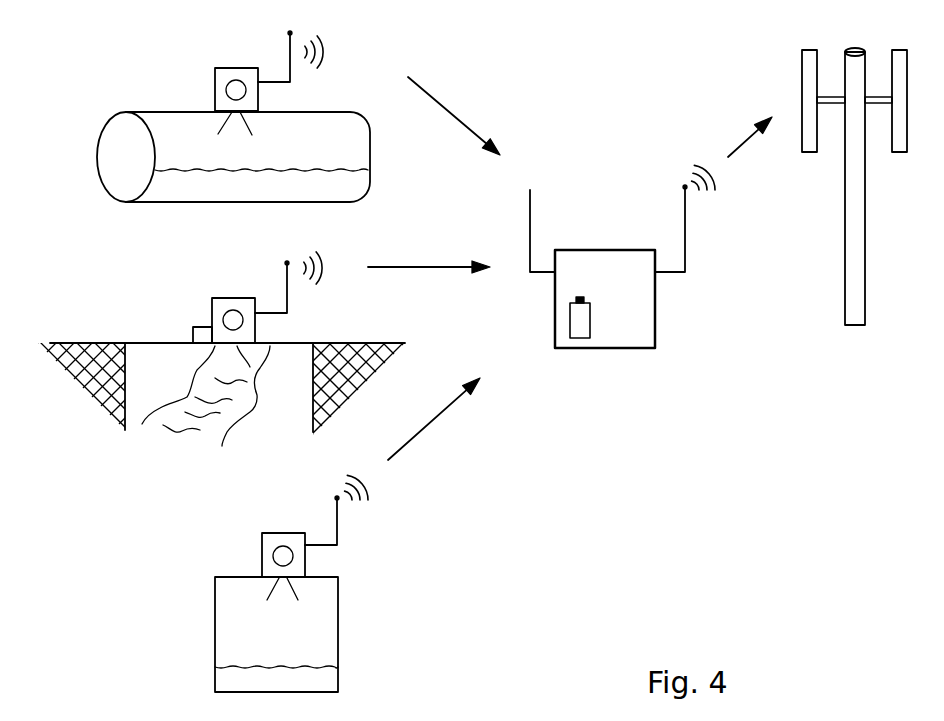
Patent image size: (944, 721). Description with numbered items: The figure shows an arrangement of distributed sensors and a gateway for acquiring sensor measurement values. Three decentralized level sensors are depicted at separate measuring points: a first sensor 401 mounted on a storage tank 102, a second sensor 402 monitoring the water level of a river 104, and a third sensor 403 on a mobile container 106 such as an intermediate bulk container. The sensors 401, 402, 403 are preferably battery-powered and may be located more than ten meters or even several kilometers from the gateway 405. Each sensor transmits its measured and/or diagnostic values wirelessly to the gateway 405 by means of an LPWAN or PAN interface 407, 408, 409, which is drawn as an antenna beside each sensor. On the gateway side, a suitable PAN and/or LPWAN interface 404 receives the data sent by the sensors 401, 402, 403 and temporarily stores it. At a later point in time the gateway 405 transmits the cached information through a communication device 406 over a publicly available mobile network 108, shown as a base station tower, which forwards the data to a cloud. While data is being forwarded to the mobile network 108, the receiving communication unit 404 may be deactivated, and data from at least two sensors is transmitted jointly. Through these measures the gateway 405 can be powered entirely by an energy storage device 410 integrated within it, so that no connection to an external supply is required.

The storage tank 102 is at (98, 142).
The river 104 is at (167, 423).
The mobile container 106 is at (215, 630).
The public mobile radio network 108 is at (857, 48).
The sensor 401 is at (215, 82).
The sensor 402 is at (227, 298).
The sensor 403 is at (262, 555).
The PAN and/or LPWAN interface 404 is at (529, 195).
The gateway 405 is at (645, 350).
The communication device 406 is at (688, 247).
The LPWAN interface 407 is at (290, 33).
The LPWAN interface 408 is at (287, 263).
The LPWAN interface 409 is at (338, 503).
The energy storage device 410 is at (577, 330).